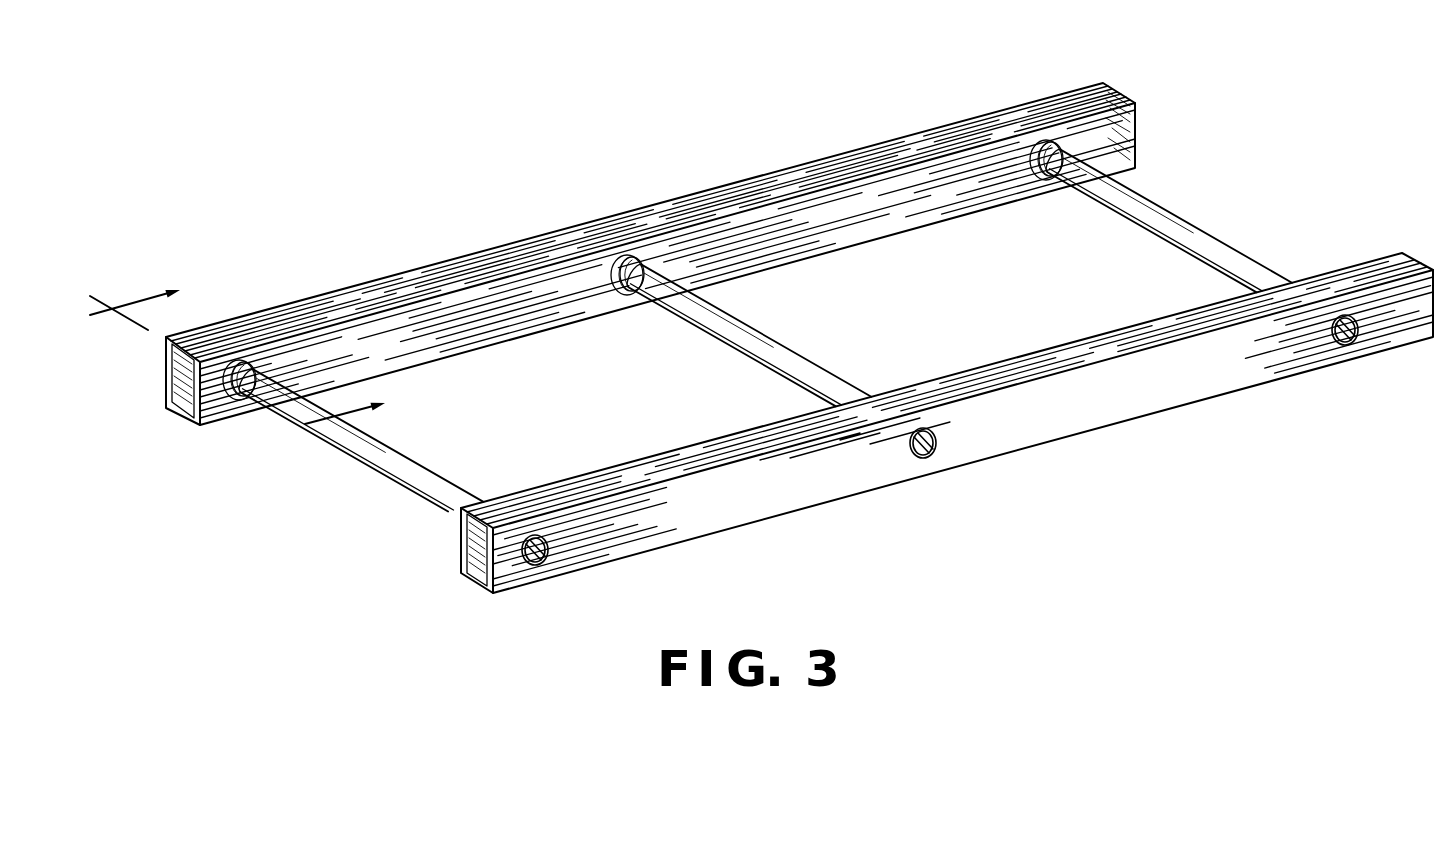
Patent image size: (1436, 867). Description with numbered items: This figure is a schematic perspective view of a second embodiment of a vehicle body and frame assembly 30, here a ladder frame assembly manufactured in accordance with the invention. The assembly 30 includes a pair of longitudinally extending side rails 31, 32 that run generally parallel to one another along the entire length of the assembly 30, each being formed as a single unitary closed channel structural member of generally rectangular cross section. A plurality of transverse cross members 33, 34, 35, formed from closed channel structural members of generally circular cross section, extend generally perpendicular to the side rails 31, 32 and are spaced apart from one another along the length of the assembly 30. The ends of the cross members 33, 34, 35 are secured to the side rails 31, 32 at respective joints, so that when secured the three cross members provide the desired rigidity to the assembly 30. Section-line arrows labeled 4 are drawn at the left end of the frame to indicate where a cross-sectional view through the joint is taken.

The vehicle body and frame assembly 30 is at (558, 150).
The side rail 31 is at (808, 178).
The side rail 32 is at (1082, 398).
The cross member 33 is at (412, 467).
The cross member 34 is at (775, 350).
The cross member 35 is at (1178, 222).
The section line 4- 4 is at (225, 381).